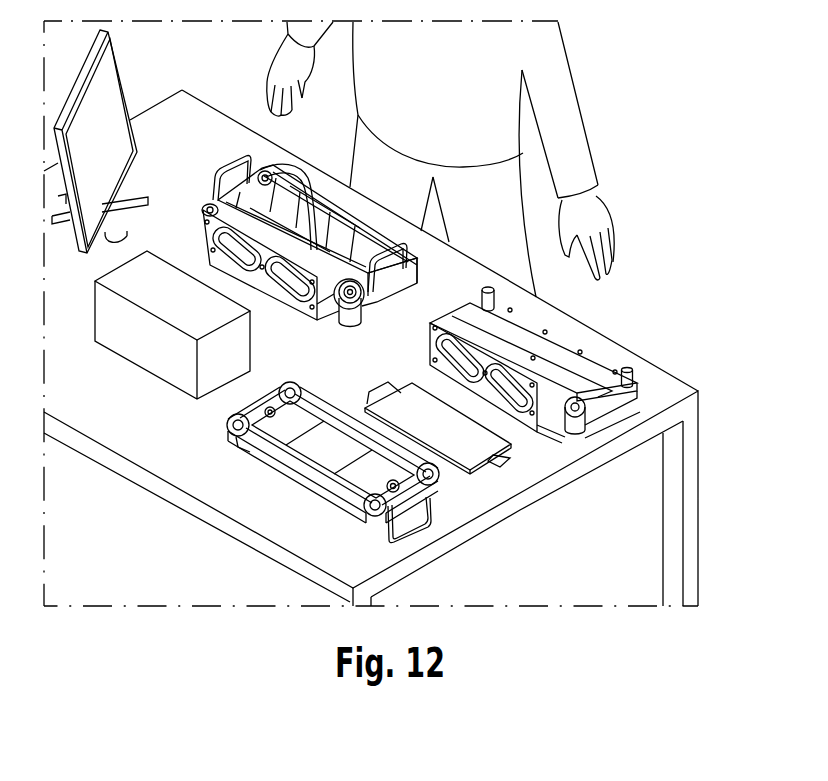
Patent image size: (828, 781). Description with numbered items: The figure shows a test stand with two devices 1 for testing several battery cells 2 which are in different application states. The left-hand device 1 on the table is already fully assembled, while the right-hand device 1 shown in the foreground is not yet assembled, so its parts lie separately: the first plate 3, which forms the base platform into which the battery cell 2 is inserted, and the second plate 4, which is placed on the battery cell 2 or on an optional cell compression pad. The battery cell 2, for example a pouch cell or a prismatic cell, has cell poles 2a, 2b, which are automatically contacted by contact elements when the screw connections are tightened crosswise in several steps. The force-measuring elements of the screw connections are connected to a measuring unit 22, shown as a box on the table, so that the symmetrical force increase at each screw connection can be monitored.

The device 1 is at (221, 158).
The battery cell 2 is at (451, 457).
The cell pole 2a is at (498, 463).
The cell pole 2b is at (368, 393).
The first plate 3 is at (567, 367).
The second plate 4 is at (312, 473).
The measuring unit 22 is at (148, 350).